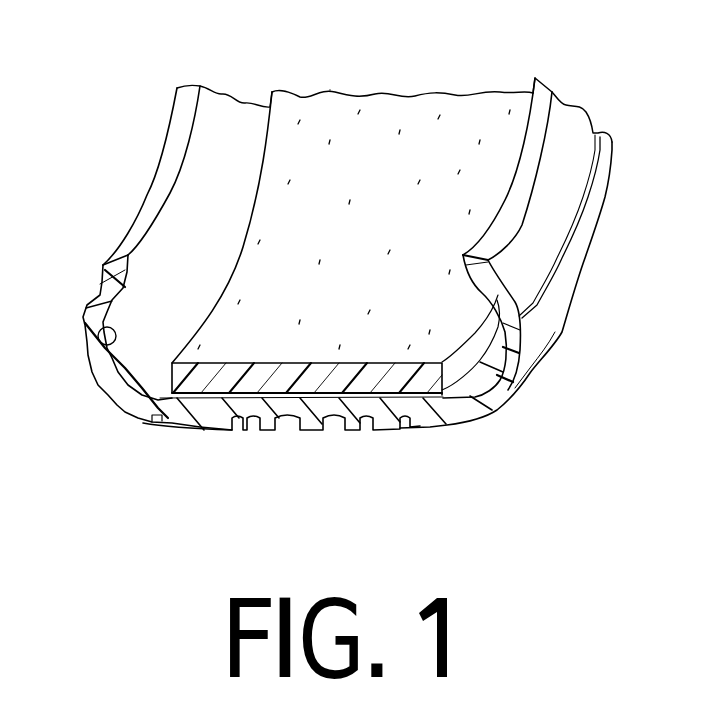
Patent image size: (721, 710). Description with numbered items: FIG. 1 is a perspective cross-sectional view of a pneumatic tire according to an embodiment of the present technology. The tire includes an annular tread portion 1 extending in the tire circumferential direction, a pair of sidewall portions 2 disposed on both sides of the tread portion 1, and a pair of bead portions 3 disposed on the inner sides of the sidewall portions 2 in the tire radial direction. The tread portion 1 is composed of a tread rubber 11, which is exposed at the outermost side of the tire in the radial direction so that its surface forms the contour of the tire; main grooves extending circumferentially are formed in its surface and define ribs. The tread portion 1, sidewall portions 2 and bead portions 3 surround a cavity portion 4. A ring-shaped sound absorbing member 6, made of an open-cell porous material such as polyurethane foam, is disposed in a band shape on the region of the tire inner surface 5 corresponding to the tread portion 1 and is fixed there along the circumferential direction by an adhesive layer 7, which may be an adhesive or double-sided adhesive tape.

The tread portion 1 is at (267, 433).
The sidewall portions 2 is at (90, 363).
The bead portions 3 is at (102, 281).
The cavity portion 4 is at (190, 243).
The tire inner surface 5 is at (98, 334).
The sound absorbing member 6 is at (393, 143).
The adhesive layer 7 is at (387, 403).
The tread rubber 11 is at (320, 410).